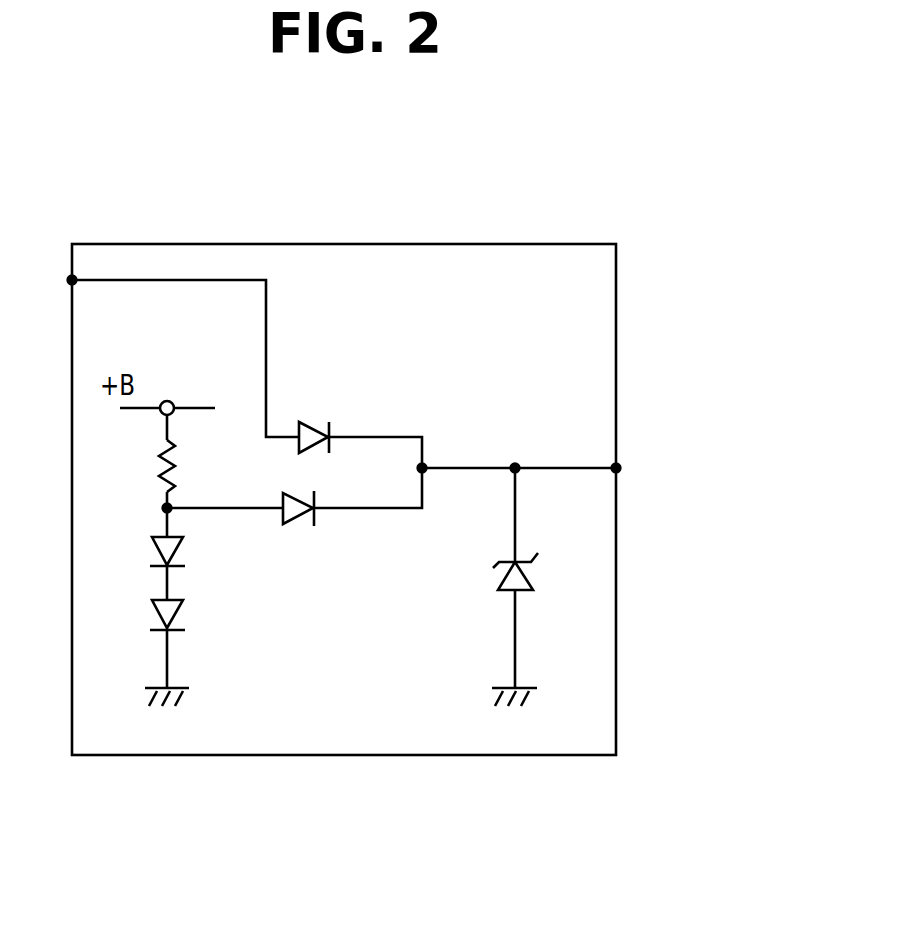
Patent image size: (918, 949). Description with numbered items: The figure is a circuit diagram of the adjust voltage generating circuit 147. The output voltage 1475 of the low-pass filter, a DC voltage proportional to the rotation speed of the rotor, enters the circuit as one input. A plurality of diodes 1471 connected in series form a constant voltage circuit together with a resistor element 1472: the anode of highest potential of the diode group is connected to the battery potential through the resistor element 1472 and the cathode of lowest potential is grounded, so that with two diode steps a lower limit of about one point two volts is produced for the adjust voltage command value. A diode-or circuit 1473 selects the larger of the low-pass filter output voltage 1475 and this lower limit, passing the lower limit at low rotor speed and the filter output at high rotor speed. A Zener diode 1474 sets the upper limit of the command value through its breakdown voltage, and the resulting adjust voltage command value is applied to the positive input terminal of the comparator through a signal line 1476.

The adjust voltage generating circuit 147 is at (588, 738).
The diodes 1471 is at (183, 578).
The resistor element 1472 is at (177, 453).
The diode-or circuit 1473 is at (328, 495).
The Zener diode 1474 is at (530, 578).
The output voltage of the low-pass filter 1475 is at (113, 281).
The signal line 1476 is at (563, 467).